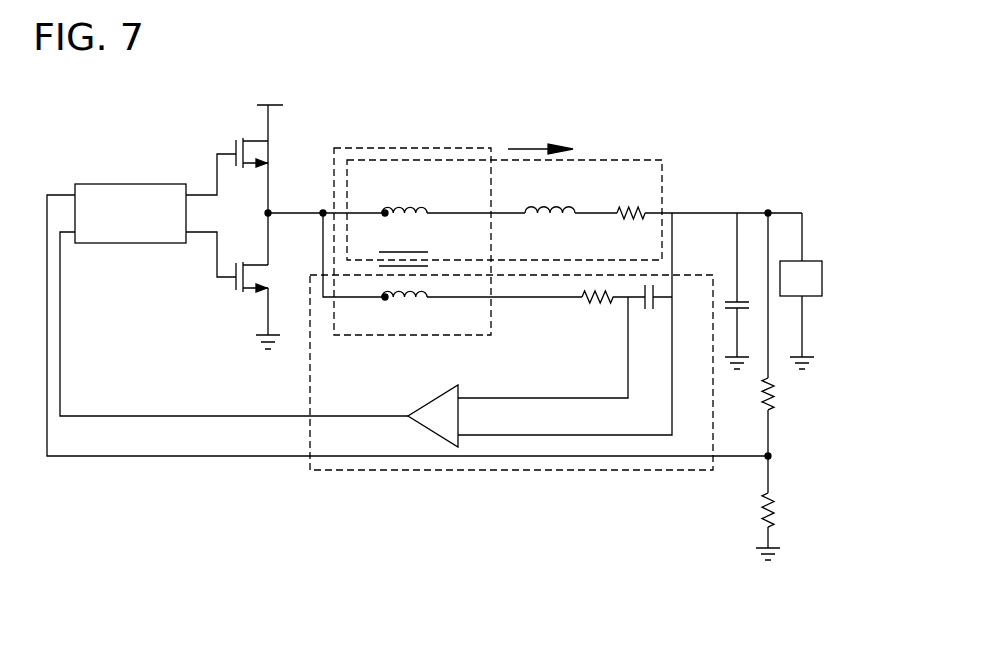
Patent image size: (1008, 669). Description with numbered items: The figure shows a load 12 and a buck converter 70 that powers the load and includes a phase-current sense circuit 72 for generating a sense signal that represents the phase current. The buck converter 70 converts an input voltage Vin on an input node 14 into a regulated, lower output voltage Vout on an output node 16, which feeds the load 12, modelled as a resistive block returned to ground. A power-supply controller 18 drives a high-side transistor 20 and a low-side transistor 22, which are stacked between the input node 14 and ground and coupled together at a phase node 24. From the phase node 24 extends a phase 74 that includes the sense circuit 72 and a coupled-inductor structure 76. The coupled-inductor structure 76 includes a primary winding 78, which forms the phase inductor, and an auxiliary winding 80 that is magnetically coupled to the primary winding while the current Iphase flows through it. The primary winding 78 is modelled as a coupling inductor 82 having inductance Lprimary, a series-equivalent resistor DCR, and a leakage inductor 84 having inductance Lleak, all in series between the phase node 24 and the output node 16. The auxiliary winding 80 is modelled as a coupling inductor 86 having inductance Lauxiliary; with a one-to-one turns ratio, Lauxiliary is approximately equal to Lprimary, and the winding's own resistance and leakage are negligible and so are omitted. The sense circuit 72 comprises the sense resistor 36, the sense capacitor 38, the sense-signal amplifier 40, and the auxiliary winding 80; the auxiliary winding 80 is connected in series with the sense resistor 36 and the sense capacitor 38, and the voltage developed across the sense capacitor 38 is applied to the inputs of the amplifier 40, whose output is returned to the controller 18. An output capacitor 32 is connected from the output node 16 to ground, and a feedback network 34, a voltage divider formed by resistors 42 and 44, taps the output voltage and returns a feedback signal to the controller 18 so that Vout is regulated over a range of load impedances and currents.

The buck converter 70 is at (100, 128).
The load 12 is at (822, 278).
The input node 14 is at (268, 122).
The output node 16 is at (768, 212).
The power-supply controller 18 is at (120, 243).
The high-side NMOS switching transistor 20 is at (262, 150).
The low-side NMOS switching transistor 22 is at (246, 290).
The phase node 24 is at (266, 213).
The output capacitor 32 is at (745, 307).
The feedback network 34 is at (756, 394).
The sense resistor 36 is at (597, 301).
The sense capacitor 38 is at (655, 308).
The sense-signal amplifier 40 is at (431, 428).
The resistor 42 is at (770, 405).
The resistor 44 is at (776, 513).
The phase-current sense circuit 72 is at (538, 470).
The phase 74 is at (640, 95).
The coupled-inductor structure 76 is at (463, 148).
The primary winding 78 is at (642, 160).
The auxiliary winding 80 is at (494, 340).
The coupling inductor 82 is at (427, 216).
The leakage inductor 84 is at (556, 216).
The coupling inductor 86 is at (410, 299).